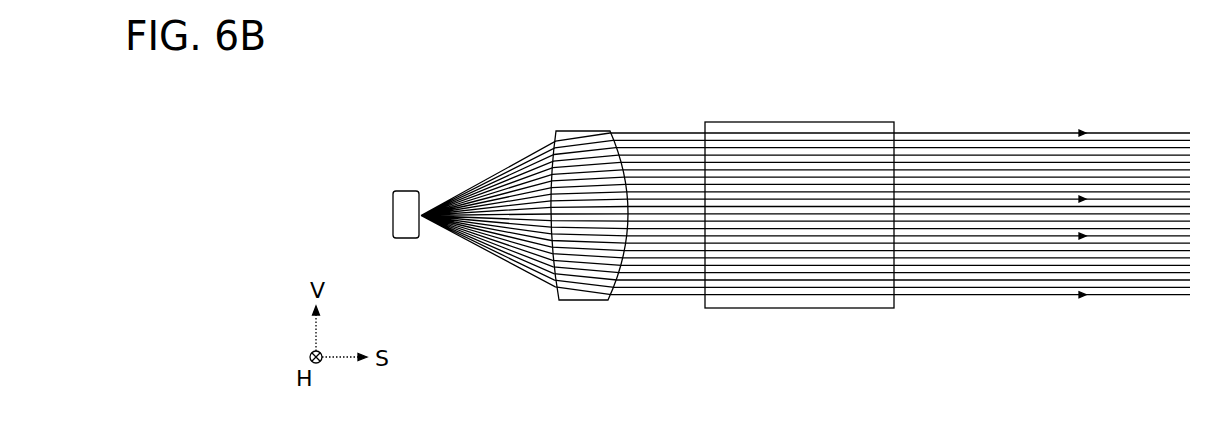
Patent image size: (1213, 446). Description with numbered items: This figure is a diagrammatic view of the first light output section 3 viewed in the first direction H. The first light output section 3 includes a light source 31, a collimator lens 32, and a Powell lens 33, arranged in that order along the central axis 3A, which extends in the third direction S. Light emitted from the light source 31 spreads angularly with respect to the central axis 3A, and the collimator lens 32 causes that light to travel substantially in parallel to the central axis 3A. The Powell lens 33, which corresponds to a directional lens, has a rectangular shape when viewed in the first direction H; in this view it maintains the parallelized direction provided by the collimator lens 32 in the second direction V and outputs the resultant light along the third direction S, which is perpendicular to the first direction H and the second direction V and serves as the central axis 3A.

The first light output section 3 is at (737, 62).
The central axis 3A is at (1138, 208).
The light source 31 is at (398, 223).
The collimator lens 32 is at (553, 293).
The Powell lens 33 is at (860, 290).